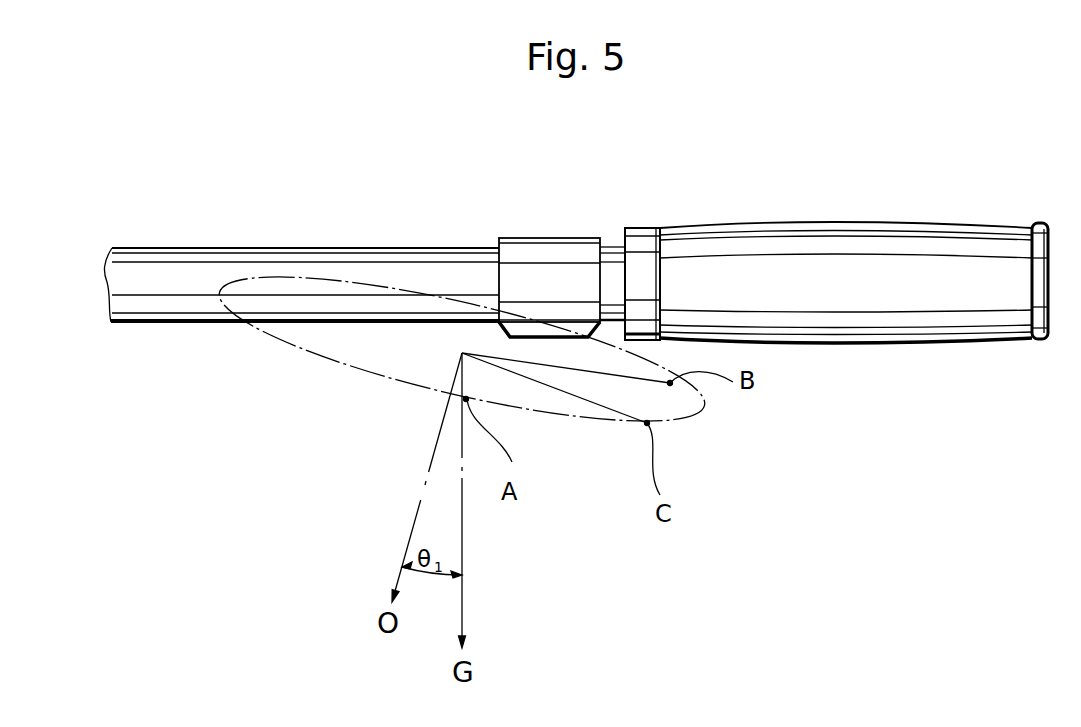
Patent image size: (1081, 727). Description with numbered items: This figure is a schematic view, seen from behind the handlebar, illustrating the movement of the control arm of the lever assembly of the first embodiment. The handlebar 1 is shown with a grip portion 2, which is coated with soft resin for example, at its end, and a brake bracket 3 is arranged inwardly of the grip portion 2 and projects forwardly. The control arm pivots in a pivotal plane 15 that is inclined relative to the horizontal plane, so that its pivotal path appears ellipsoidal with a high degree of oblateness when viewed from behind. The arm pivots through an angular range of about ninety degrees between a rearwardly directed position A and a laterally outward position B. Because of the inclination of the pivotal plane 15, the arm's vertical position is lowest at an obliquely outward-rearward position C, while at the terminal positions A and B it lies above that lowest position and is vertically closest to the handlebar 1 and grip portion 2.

The handlebar 1 is at (182, 250).
The grip portion 2 is at (952, 228).
The brake bracket 3 is at (558, 238).
The pivotal plane 15 is at (288, 300).